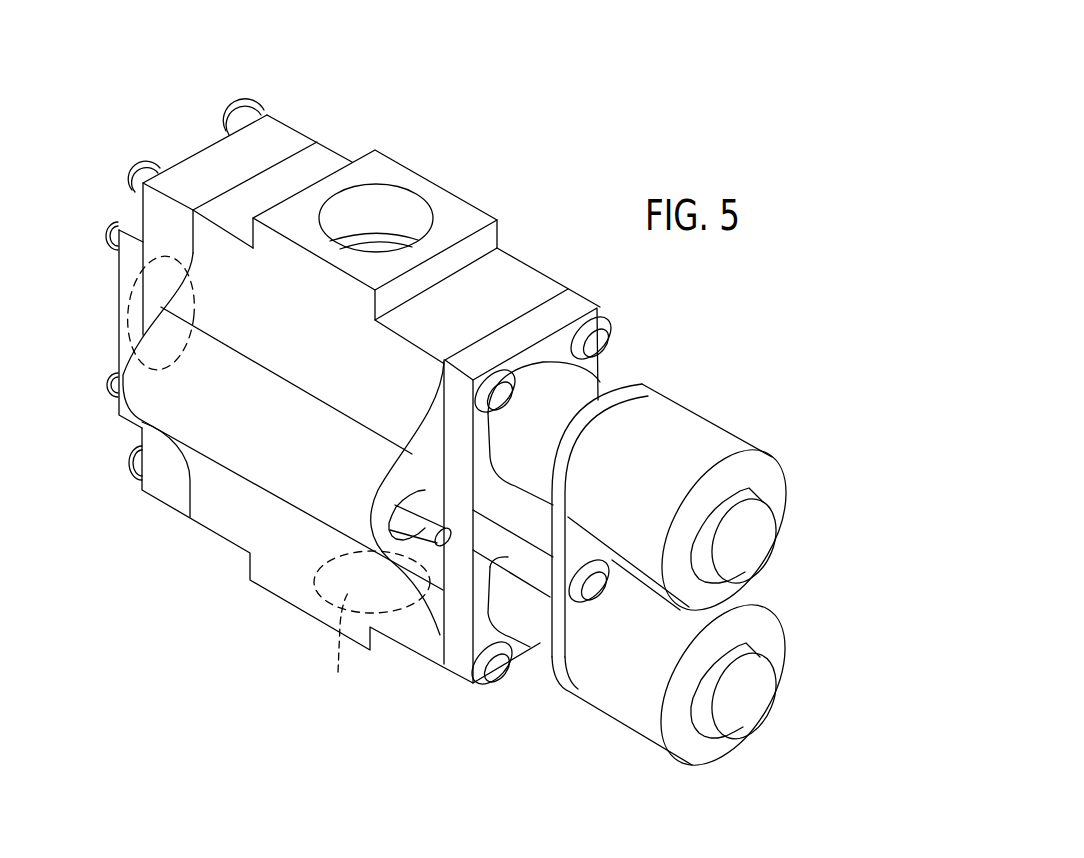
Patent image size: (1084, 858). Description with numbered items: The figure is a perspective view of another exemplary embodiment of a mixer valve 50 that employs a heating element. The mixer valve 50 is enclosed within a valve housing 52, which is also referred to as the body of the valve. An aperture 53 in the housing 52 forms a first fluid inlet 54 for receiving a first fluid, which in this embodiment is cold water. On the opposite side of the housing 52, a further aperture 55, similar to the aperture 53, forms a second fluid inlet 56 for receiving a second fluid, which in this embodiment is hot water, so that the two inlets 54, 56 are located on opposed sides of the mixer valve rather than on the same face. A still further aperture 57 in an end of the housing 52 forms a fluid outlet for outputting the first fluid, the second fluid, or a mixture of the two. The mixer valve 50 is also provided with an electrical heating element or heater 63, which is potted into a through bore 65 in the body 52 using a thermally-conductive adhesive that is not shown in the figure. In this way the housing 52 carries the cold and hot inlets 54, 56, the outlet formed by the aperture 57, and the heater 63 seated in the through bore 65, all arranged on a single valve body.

The mixer valve 50 is at (178, 90).
The valve housing 52 is at (227, 508).
The aperture 53 is at (350, 215).
The first fluid inlet 54 is at (402, 215).
The further aperture 55 is at (337, 642).
The second fluid inlet 56 is at (315, 603).
The still further aperture 57 is at (123, 302).
The electrical heating element 63 is at (447, 546).
The through bore 65 is at (436, 550).